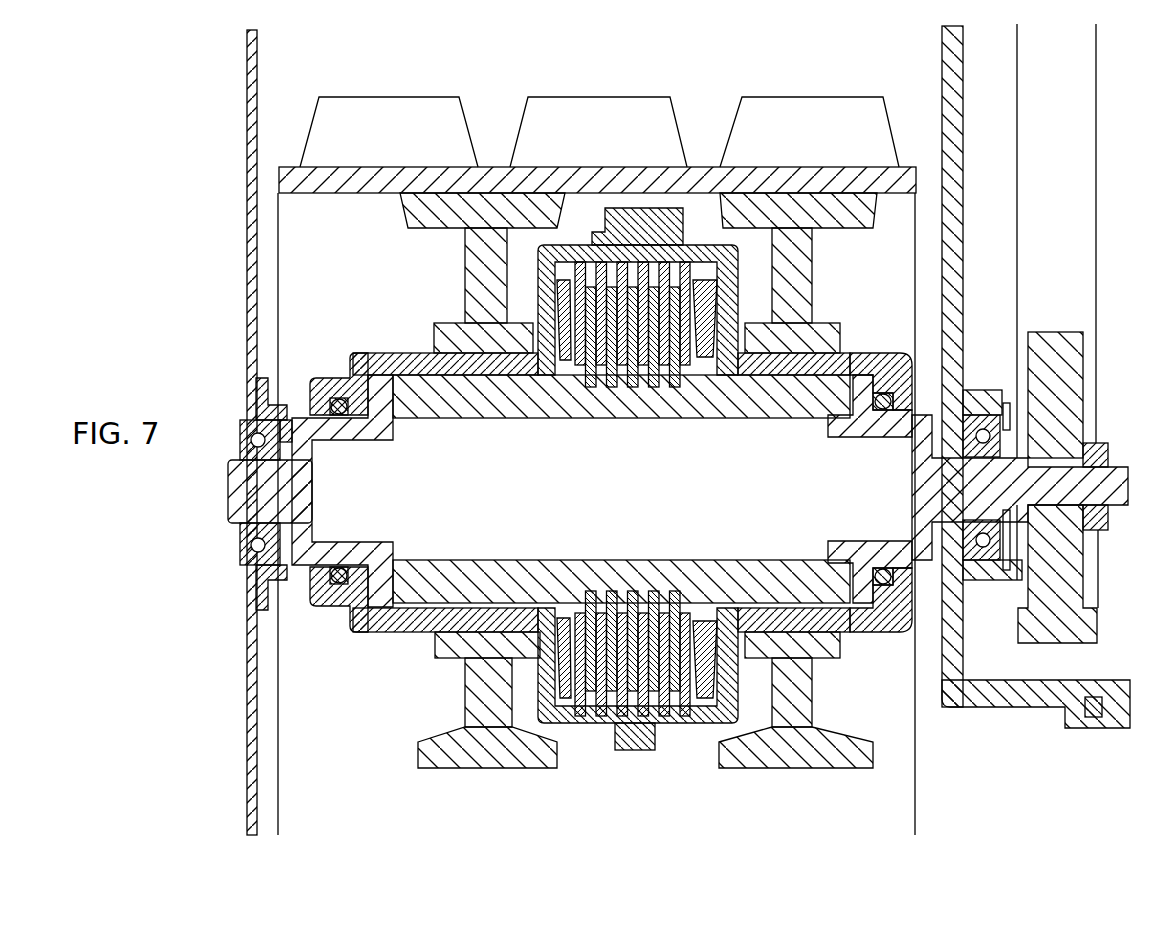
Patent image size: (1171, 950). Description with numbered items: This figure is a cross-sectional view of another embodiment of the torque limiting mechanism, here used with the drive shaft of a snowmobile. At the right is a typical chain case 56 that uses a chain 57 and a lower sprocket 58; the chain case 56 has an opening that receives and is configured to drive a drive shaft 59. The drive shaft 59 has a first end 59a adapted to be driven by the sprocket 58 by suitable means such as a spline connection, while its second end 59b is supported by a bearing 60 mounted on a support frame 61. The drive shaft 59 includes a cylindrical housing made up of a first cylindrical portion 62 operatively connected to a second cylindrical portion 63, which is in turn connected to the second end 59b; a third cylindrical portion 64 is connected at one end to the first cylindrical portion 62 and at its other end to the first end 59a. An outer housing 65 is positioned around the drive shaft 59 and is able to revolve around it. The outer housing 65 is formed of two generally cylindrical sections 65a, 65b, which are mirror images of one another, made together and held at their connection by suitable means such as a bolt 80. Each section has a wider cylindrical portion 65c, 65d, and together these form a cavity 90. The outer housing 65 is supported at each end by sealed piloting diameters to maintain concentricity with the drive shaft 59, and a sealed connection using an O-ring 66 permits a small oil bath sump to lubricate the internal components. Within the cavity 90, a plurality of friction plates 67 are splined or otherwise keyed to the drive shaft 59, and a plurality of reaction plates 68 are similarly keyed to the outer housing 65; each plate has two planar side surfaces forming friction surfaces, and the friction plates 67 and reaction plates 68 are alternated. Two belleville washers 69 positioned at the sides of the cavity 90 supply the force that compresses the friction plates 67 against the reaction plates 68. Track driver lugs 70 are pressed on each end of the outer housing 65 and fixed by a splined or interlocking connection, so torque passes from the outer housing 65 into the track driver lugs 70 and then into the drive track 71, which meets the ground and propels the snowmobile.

The chain case 56 is at (1000, 707).
The chain 57 is at (1017, 165).
The lower sprocket 58 is at (1048, 332).
The drive shaft 59 is at (405, 380).
The first end 59a is at (1128, 505).
The second end 59b is at (295, 415).
The bearing 60 is at (242, 566).
The support frame 61 is at (247, 716).
The first cylindrical portion 62 is at (500, 402).
The second cylindrical portion 63 is at (372, 440).
The third cylindrical portion 64 is at (848, 432).
The outer housing 65 is at (390, 633).
The first section 65a is at (418, 352).
The second section 65b is at (880, 345).
The wider cylindrical portion 65c is at (578, 722).
The wider cylindrical portion 65d is at (676, 722).
The O-ring 66 is at (340, 414).
The friction plates 67 is at (590, 372).
The reaction plates 68 is at (635, 375).
The belleville washers 69 is at (563, 292).
The track driver lugs 70 is at (840, 318).
The drive track 71 is at (355, 95).
The bolt 80 is at (592, 215).
The cavity 90 is at (574, 362).